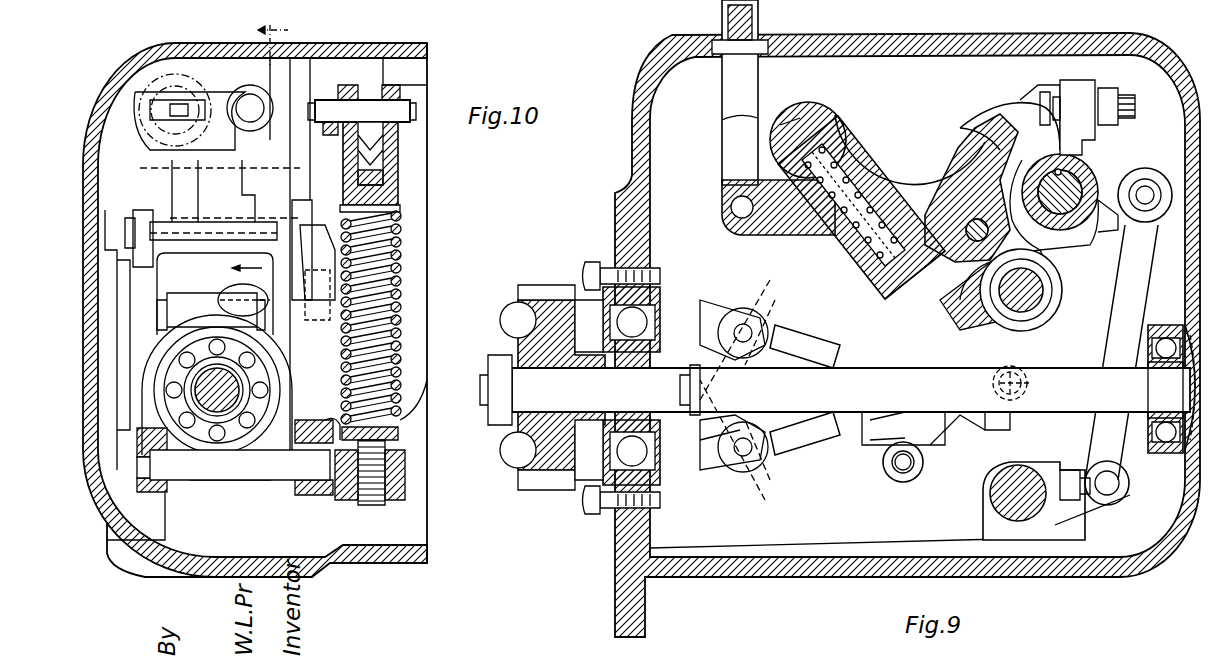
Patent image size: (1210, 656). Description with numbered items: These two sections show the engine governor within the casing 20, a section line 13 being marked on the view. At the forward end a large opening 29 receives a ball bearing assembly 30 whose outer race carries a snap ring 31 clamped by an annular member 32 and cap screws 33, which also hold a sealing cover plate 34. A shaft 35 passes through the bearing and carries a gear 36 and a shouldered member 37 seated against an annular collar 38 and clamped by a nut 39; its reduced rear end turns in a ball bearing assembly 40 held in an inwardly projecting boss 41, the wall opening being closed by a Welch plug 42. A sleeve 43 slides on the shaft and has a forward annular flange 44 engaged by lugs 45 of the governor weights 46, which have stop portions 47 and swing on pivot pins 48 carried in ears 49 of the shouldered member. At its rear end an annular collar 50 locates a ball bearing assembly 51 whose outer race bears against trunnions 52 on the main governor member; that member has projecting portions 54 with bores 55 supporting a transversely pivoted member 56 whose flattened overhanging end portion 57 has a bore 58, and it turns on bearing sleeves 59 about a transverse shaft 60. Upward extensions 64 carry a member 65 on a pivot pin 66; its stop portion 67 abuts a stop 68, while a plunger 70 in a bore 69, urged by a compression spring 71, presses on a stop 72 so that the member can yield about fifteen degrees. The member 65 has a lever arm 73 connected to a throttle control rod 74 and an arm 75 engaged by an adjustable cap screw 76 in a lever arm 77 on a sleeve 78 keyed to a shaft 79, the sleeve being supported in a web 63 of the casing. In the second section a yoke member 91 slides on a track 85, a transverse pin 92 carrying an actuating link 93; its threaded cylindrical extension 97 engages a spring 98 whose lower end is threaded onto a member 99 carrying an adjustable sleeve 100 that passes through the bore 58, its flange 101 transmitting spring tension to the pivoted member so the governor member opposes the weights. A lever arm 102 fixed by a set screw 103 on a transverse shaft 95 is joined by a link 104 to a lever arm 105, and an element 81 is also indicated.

In FIG. 10, the section line 13 is at (262, 148).
In FIG. 10, the casing 20 is at (430, 555).
In FIG. 9, the casing 20 is at (930, 48).
In FIG. 9, the large opening 29 is at (662, 300).
In FIG. 9, the ball bearing assembly 30 is at (650, 319).
In FIG. 9, the snap ring 31 is at (585, 300).
In FIG. 9, the annular member 32 is at (592, 268).
In FIG. 9, the cap screws 33 is at (588, 508).
In FIG. 9, the cover plate 34 is at (608, 418).
In FIG. 10, the shaft 35 is at (220, 415).
In FIG. 9, the shaft 35 is at (851, 390).
In FIG. 9, the gear 36 is at (520, 505).
In FIG. 9, the shouldered member 37 is at (710, 468).
In FIG. 9, the annular collar 38 is at (634, 450).
In FIG. 9, the nut 39 is at (492, 365).
In FIG. 9, the ball bearing assembly 40 is at (1144, 390).
In FIG. 9, the inwardly projecting boss 41 is at (1165, 455).
In FIG. 9, the Welch plug 42 is at (1165, 389).
In FIG. 10, the sleeve 43 is at (245, 430).
In FIG. 9, the sleeve 43 is at (868, 443).
In FIG. 9, the annular flange 44 is at (745, 458).
In FIG. 9, the lugs 45 is at (733, 390).
In FIG. 9, the governor weights 46 is at (790, 330).
In FIG. 9, the stop portions 47 is at (735, 315).
In FIG. 9, the pivot pins 48 is at (743, 324).
In FIG. 9, the ears 49 is at (750, 392).
In FIG. 10, the annular collar 50 is at (190, 455).
In FIG. 9, the annular collar 50 is at (955, 440).
In FIG. 10, the ball bearing assembly 51 is at (200, 345).
In FIG. 9, the ball bearing assembly 51 is at (995, 430).
In FIG. 10, the trunnions 52 is at (150, 395).
In FIG. 9, the trunnions 52 is at (1028, 388).
In FIG. 10, the projecting portions 54 is at (137, 440).
In FIG. 9, the projecting portions 54 is at (878, 425).
In FIG. 9, the bores 55 is at (905, 483).
In FIG. 10, the transversely pivoted member 56 is at (312, 482).
In FIG. 10, the overhanging end portion 57 is at (355, 500).
In FIG. 10, the bore 58 is at (395, 435).
In FIG. 9, the bearing sleeves 59 is at (1053, 282).
In FIG. 9, the transverse shaft 60 is at (1043, 305).
In FIG. 10, the web 63 is at (312, 245).
In FIG. 10, the upward extensions 64 is at (143, 215).
In FIG. 9, the upward extensions 64 is at (962, 275).
In FIG. 9, the member 65 is at (820, 130).
In FIG. 10, the pivot pin 66 is at (118, 225).
In FIG. 9, the pivot pin 66 is at (965, 215).
In FIG. 9, the stop portion 67 is at (1030, 240).
In FIG. 9, the stop 68 is at (1040, 262).
In FIG. 9, the bore 69 is at (886, 280).
In FIG. 9, the plunger 70 is at (885, 215).
In FIG. 9, the compression spring 71 is at (858, 185).
In FIG. 10, the stop 72 is at (215, 294).
In FIG. 9, the stop 72 is at (938, 279).
In FIG. 9, the lever arm 73 is at (748, 192).
In FIG. 9, the throttle control rod 74 is at (722, 105).
In FIG. 9, the arm 75 is at (1003, 125).
In FIG. 10, the adjustable cap screw 76 is at (250, 100).
In FIG. 9, the adjustable cap screw 76 is at (1112, 95).
In FIG. 9, the lever arm 77 is at (1068, 100).
In FIG. 9, the sleeve 78 is at (1109, 216).
In FIG. 9, the shaft 79 is at (1038, 198).
In FIG. 10, the lever pivot 81 is at (200, 125).
In FIG. 10, the track 85 is at (380, 152).
In FIG. 10, the yoke member 91 is at (390, 178).
In FIG. 10, the transverse pin 92 is at (405, 108).
In FIG. 10, the actuating link 93 is at (338, 95).
In FIG. 9, the transverse shaft 95 is at (1045, 475).
In FIG. 10, the cylindrical extension 97 is at (400, 210).
In FIG. 10, the spring 98 is at (400, 270).
In FIG. 10, the member 99 is at (420, 400).
In FIG. 10, the sleeve 100 is at (400, 460).
In FIG. 10, the flange 101 is at (405, 478).
In FIG. 9, the lever arm 102 is at (1068, 525).
In FIG. 9, the set screw 103 is at (1120, 495).
In FIG. 9, the link 104 is at (1150, 282).
In FIG. 9, the lever arm 105 is at (1140, 182).